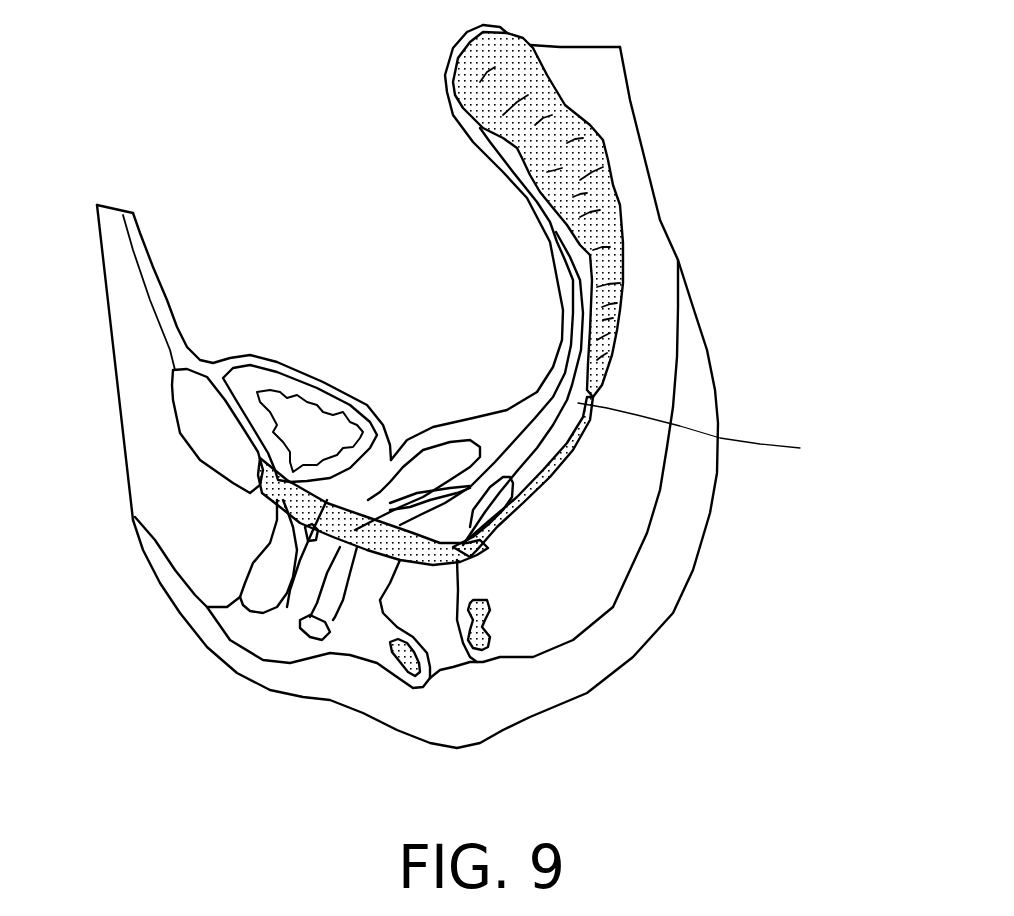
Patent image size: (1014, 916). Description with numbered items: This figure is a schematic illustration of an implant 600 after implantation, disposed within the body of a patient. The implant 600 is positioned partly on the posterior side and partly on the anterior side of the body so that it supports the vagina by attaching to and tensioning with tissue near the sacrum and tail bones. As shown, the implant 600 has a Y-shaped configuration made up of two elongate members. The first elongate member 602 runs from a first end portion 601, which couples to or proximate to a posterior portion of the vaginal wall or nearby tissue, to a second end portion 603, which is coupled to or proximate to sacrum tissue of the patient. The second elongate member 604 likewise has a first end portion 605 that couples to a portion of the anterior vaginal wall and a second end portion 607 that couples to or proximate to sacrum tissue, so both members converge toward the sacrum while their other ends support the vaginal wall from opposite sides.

The implant 600 is at (446, 242).
The first end portion 601 is at (487, 603).
The first elongate member 602 is at (642, 395).
The second end portion 603 is at (645, 214).
The second elongate member 604 is at (417, 431).
The first end portion 605 is at (255, 495).
The second end portion 607 is at (614, 326).